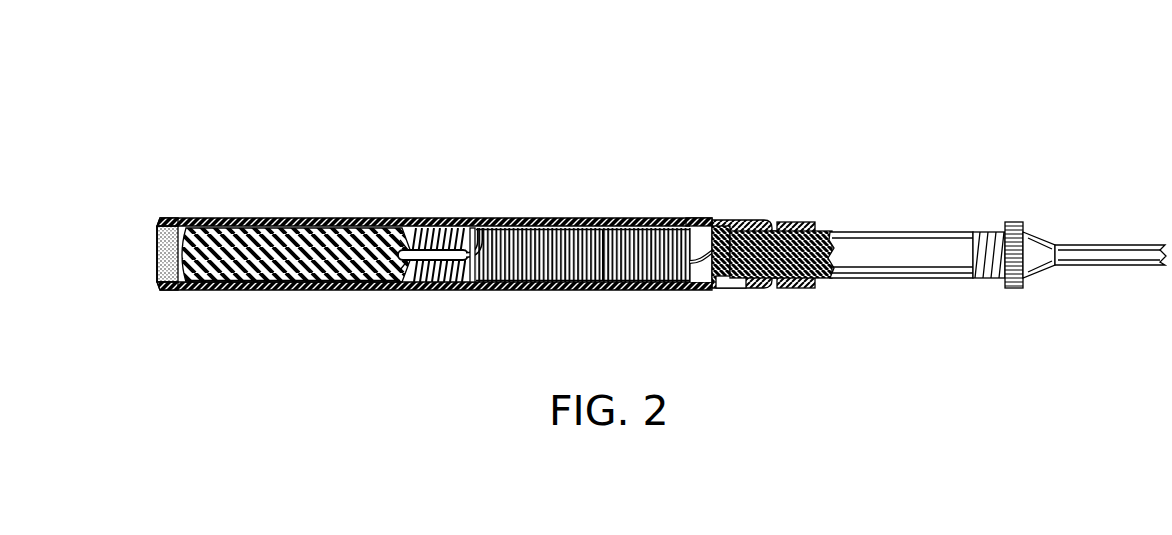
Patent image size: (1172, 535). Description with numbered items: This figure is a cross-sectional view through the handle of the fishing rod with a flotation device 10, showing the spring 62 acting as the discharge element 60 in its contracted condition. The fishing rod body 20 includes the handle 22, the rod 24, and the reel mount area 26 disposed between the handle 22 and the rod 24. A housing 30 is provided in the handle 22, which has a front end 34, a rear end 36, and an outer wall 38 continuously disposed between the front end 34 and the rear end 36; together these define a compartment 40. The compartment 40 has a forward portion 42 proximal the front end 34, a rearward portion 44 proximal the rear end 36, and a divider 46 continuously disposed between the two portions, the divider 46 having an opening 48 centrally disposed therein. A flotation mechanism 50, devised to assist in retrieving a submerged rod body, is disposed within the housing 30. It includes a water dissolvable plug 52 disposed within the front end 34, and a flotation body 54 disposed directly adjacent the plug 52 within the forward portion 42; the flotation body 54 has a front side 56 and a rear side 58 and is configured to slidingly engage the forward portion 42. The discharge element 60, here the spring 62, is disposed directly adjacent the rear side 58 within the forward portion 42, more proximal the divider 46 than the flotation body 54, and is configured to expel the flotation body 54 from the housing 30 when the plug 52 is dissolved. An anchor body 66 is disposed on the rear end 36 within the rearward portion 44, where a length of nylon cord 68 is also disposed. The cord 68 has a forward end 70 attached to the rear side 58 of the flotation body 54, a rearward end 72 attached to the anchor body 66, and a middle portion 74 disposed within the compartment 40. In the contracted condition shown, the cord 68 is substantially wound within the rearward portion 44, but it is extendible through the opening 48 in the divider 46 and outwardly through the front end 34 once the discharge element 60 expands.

The fishing rod with a flotation device 10 is at (623, 199).
The fishing rod body 20 is at (880, 218).
The handle 22 is at (360, 218).
The rod 24 is at (1110, 248).
The reel mount area 26 is at (946, 232).
The housing 30 is at (434, 234).
The front end 34 is at (172, 218).
The rear end 36 is at (758, 220).
The outer wall 38 is at (583, 249).
The compartment 40 is at (703, 224).
The forward portion 42 is at (187, 292).
The rearward portion 44 is at (693, 224).
The divider 46 is at (478, 292).
The opening 48 is at (705, 290).
The flotation mechanism 50 is at (318, 214).
The water dissolvable plug 52 is at (158, 258).
The flotation body 54 is at (297, 300).
The front side 56 is at (158, 232).
The rear side 58 is at (410, 292).
The discharge element 60 is at (433, 292).
The spring 62 is at (440, 224).
The anchor body 66 is at (725, 220).
The nylon cord 68 is at (603, 258).
The forward end 70 is at (347, 292).
The rearward end 72 is at (730, 290).
The middle portion 74 is at (462, 224).